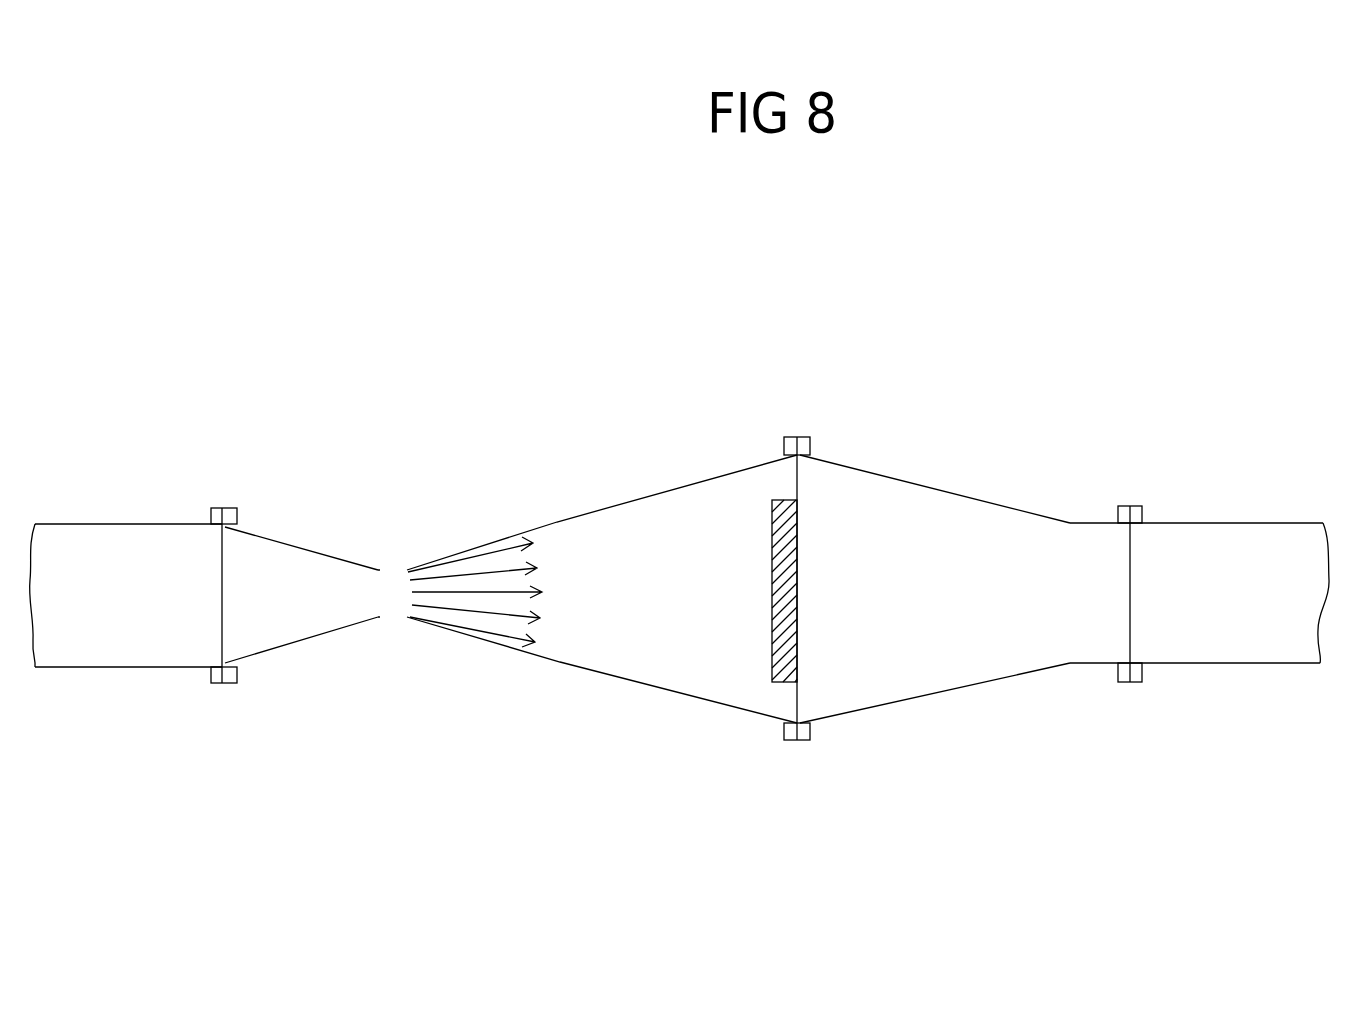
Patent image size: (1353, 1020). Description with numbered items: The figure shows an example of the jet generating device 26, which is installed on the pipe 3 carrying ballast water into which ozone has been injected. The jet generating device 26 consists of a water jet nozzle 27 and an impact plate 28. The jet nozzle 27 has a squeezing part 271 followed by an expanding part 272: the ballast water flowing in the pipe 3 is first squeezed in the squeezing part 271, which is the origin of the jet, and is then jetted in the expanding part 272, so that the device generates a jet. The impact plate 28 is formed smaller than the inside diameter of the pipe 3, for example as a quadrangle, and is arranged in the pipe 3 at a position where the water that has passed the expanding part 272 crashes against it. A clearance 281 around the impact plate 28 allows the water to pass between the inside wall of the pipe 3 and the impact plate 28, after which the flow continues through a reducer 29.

The pipe 3 is at (105, 524).
The jet generating device 26 is at (647, 535).
The water jet nozzle 27 is at (597, 678).
The squeezing part 271 is at (378, 578).
The expanding part 272 is at (467, 575).
The impact plate 28 is at (770, 526).
The clearance 281 is at (797, 485).
The reducer 29 is at (997, 683).